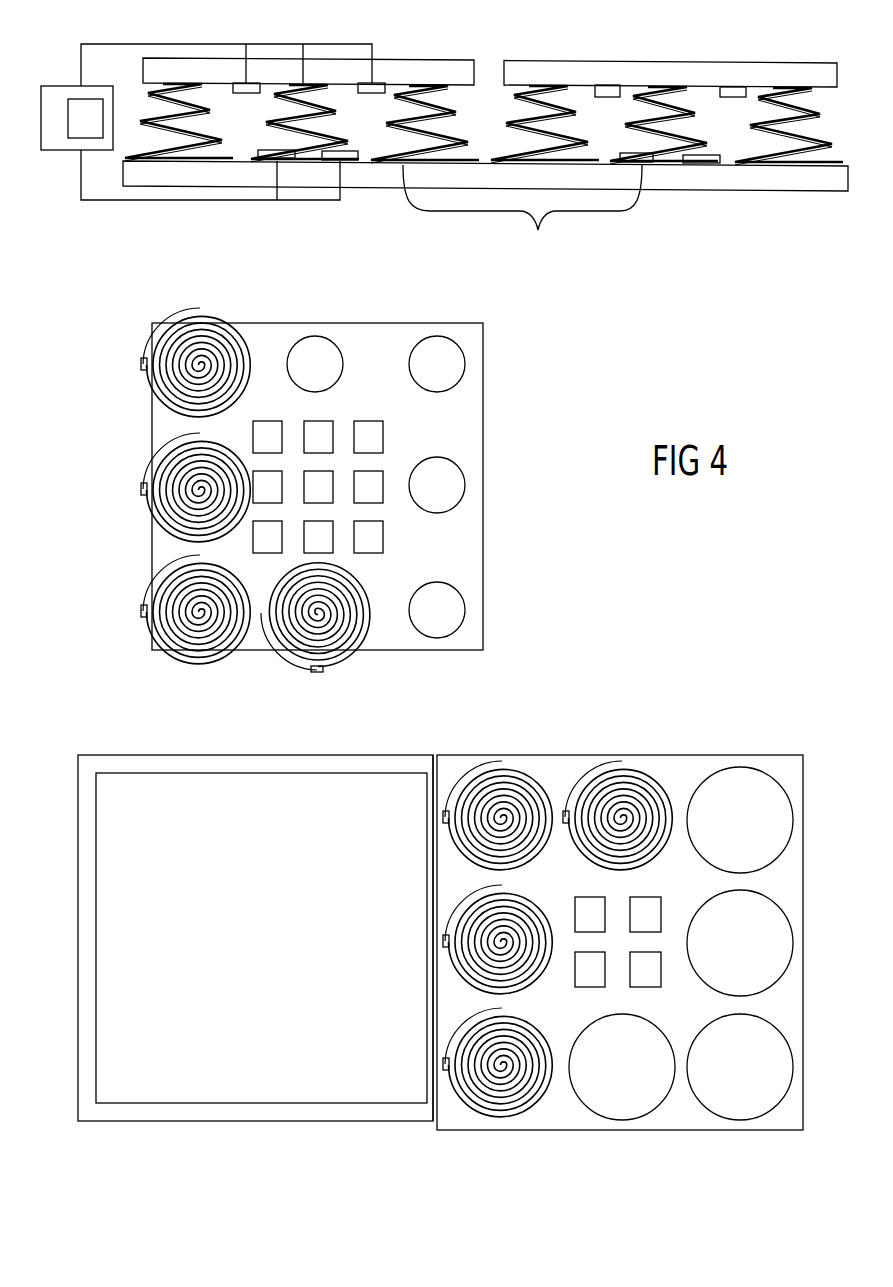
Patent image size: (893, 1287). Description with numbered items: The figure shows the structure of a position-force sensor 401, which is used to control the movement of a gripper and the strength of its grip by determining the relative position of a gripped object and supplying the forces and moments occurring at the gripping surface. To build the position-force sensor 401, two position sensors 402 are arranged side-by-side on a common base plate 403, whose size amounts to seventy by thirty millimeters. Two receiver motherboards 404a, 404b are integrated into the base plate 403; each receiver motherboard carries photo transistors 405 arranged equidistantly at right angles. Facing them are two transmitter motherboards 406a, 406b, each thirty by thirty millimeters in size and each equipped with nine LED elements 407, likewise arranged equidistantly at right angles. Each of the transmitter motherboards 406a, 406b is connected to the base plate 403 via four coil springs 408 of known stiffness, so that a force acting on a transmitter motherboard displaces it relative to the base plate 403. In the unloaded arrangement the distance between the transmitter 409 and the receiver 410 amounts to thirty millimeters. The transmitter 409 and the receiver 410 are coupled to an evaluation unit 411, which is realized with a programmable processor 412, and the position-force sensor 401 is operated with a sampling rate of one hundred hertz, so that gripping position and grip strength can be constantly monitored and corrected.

The position-force sensor 401 is at (480, 125).
The position sensor 402 is at (237, 122).
The base plate 403 is at (668, 176).
The receiver motherboard 404a is at (387, 762).
The receiver motherboard 404b is at (440, 762).
The photo transistor 405 is at (323, 163).
The transmitter motherboard 406a is at (333, 68).
The transmitter motherboard 406b is at (669, 72).
The LED element 407 is at (373, 84).
The coil spring 408 is at (812, 110).
The transmitter 409 is at (608, 90).
The receiver 410 is at (712, 153).
The evaluation unit 411 is at (55, 140).
The programmable processor 412 is at (78, 106).